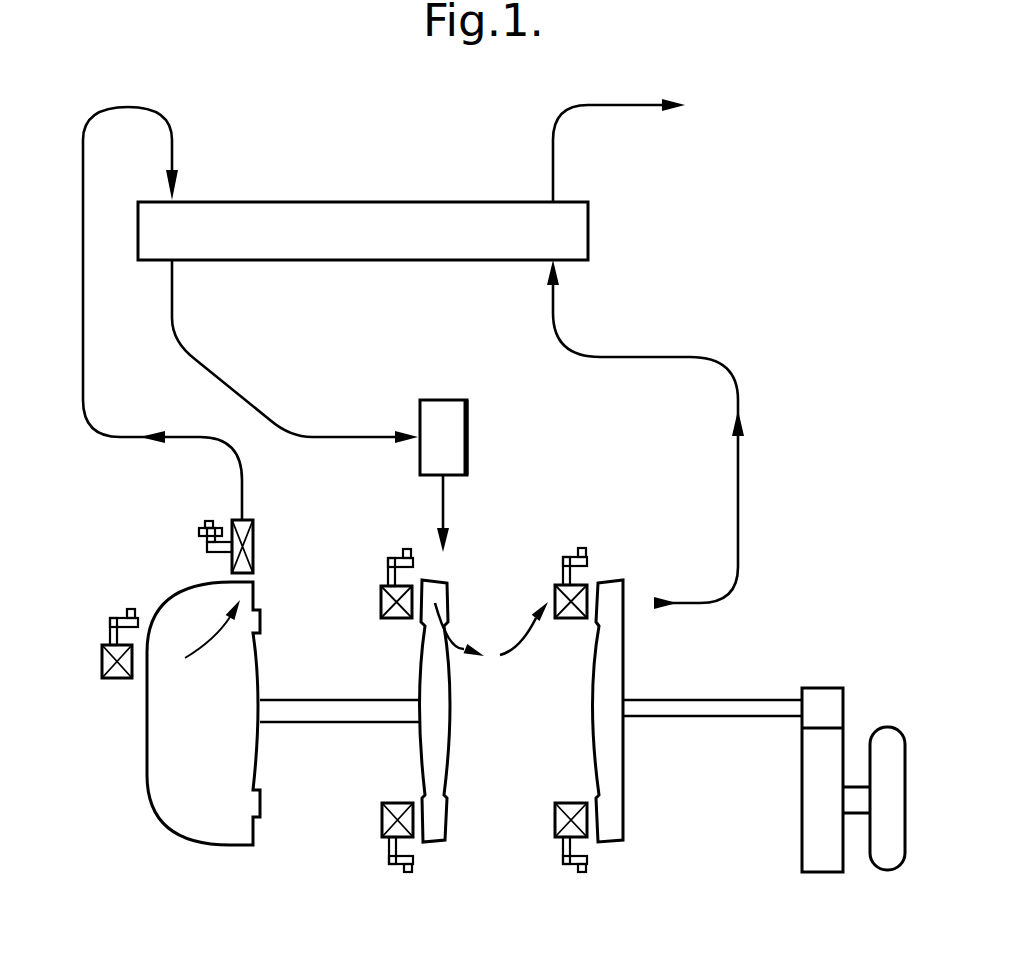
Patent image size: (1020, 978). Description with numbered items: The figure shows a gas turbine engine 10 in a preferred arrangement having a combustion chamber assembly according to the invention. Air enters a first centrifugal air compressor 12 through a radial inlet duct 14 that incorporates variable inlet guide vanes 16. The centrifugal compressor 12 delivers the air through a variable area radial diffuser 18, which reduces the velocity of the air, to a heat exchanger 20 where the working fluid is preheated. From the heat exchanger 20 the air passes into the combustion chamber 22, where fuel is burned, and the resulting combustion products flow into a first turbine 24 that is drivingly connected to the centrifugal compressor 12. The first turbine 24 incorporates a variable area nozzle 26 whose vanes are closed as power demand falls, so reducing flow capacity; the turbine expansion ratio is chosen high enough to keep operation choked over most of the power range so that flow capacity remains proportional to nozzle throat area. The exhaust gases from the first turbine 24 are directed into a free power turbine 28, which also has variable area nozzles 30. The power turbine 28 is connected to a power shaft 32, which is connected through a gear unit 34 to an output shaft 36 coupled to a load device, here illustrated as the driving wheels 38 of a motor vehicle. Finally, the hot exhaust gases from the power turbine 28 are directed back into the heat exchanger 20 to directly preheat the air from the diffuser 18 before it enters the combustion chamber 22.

The gas turbine engine 10 is at (659, 299).
The first centrifugal air compressor 12 is at (162, 760).
The radial inlet duct 14 is at (278, 743).
The variable inlet guide vanes 16 is at (102, 673).
The variable area radial diffuser 18 is at (228, 518).
The heat exchanger 20 is at (243, 202).
The combustion chamber 22 is at (467, 437).
The first turbine 24 is at (447, 810).
The variable area nozzle 26 is at (381, 598).
The free power turbine 28 is at (610, 776).
The variable area nozzles 30 is at (552, 578).
The power shaft 32 is at (724, 716).
The gear unit 34 is at (812, 843).
The output shaft 36 is at (853, 790).
The driving wheels 38 is at (882, 842).